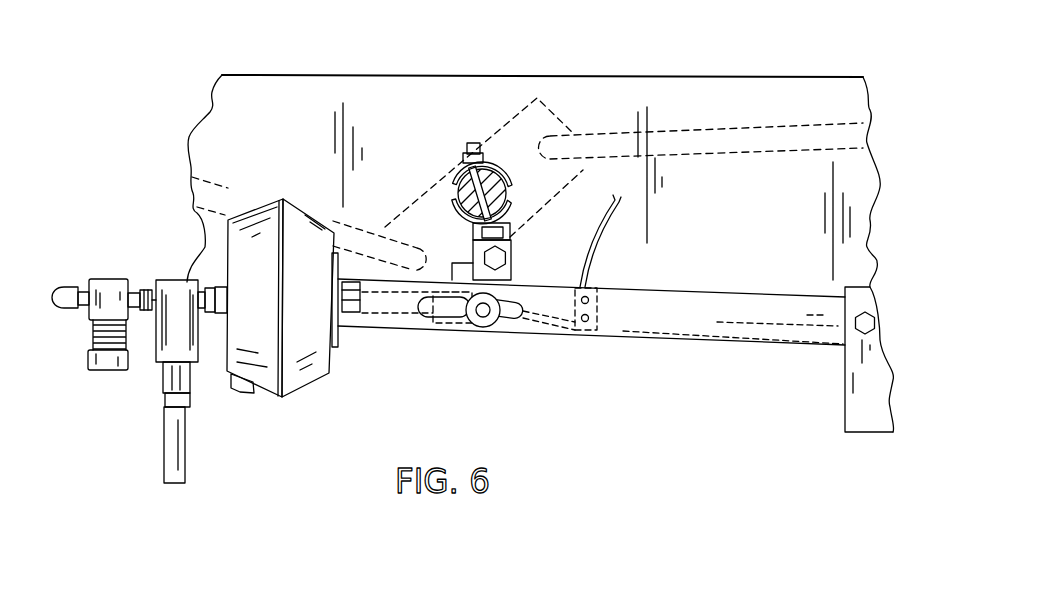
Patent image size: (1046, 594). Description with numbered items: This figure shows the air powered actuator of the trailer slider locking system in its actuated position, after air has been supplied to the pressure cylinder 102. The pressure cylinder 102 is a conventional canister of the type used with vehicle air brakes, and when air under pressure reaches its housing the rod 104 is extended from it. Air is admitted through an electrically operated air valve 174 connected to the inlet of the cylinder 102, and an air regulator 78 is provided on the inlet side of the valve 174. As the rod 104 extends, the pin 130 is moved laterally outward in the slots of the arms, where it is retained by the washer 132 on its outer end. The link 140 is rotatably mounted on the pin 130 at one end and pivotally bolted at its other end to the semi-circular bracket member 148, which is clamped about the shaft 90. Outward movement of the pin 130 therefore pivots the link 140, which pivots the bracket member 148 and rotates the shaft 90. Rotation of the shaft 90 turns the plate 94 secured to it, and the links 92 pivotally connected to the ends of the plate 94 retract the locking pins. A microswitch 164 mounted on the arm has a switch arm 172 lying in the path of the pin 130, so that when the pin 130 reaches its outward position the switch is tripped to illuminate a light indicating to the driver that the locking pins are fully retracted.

The pressure regulator 78 is at (110, 290).
The shaft 90 is at (460, 197).
The links 92 is at (355, 240).
The plate 94 is at (558, 123).
The pressure cylinder 102 is at (312, 370).
The rod 104 is at (395, 303).
The pin 130 is at (485, 317).
The washer 132 is at (462, 303).
The link 140 is at (520, 270).
The semi-circular bracket member 148 is at (512, 207).
The microswitch 164 is at (605, 308).
The switch arm 172 is at (513, 317).
The electrically operated air valve 174 is at (182, 293).